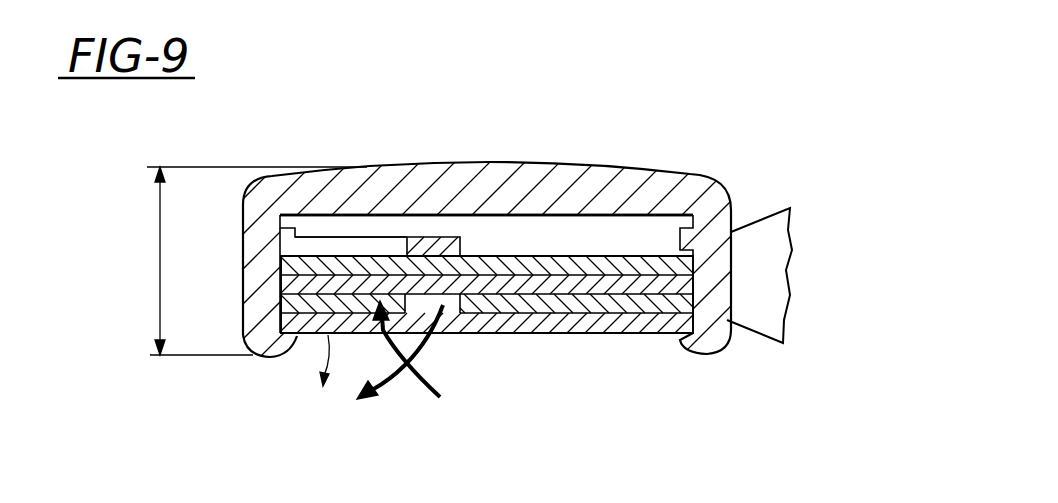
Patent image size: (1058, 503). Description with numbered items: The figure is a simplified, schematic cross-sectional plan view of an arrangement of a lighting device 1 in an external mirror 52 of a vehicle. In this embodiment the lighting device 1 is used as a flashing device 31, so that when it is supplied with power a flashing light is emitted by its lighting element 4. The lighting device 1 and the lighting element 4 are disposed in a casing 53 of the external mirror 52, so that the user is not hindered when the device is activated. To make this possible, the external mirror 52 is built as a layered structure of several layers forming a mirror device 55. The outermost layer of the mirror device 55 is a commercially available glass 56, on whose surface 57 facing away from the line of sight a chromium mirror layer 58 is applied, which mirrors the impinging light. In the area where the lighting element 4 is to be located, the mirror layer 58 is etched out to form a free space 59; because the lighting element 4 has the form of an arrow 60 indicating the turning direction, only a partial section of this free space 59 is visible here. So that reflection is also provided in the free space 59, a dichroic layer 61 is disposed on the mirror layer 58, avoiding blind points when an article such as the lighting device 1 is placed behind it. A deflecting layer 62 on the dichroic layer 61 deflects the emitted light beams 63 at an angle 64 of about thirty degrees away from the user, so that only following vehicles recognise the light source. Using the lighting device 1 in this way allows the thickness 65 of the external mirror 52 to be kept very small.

The lighting device 1 is at (380, 228).
The lighting element 4 is at (430, 238).
The flashing device 31 is at (262, 364).
The external mirror 52 is at (741, 188).
The casing 53 is at (540, 170).
The mirror device 55 is at (655, 344).
The glass 56 is at (627, 283).
The surface 57 is at (318, 334).
The mirror layer 58 is at (555, 294).
The free space 59 is at (455, 307).
The arrow 60 is at (322, 245).
The dichroic layer 61 is at (613, 258).
The deflecting layer 62 is at (655, 272).
The light beams 63 is at (390, 376).
The angle 64 is at (378, 340).
The thickness 65 is at (160, 248).